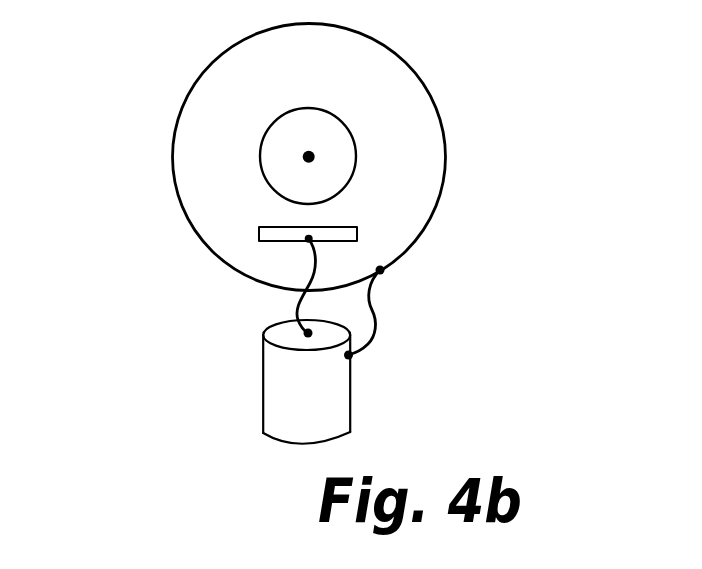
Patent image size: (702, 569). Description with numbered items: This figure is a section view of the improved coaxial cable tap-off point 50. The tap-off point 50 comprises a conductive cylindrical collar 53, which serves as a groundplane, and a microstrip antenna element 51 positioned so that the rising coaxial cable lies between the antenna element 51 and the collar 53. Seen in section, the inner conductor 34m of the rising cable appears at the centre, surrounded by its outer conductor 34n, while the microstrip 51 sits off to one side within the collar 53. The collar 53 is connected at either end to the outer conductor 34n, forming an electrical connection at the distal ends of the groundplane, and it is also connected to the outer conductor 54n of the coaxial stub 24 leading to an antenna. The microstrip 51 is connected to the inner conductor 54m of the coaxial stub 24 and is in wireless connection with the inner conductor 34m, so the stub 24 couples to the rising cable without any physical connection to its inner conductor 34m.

The tap-off point 50 is at (512, 257).
The conductive cylindrical collar 53 is at (450, 141).
The inner conductor 34m is at (300, 152).
The outer conductor 34n is at (252, 168).
The microstrip antenna element 51 is at (252, 232).
The coaxial stub 24 is at (353, 403).
The inner conductor of the coaxial stub 54m is at (305, 333).
The outer conductor of the coaxial stub 54n is at (263, 410).